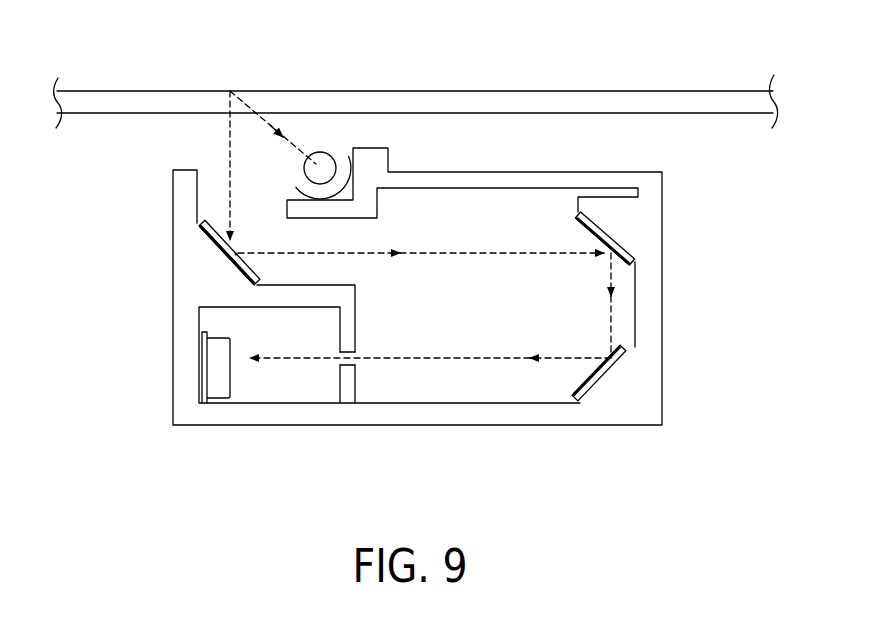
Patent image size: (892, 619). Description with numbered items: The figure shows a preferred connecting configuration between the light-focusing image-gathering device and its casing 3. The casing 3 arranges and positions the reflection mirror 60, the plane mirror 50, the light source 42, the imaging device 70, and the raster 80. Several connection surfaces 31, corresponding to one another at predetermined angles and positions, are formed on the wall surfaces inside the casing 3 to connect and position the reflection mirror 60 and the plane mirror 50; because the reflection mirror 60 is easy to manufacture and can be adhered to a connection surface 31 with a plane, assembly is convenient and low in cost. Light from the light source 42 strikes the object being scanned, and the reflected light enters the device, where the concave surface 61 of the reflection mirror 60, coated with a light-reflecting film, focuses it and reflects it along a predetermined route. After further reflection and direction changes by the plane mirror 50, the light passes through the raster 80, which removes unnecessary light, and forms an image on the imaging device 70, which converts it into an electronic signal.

The casing 3 is at (655, 220).
The first light source 42 is at (324, 152).
The reflection mirror 60 is at (205, 232).
The connection surface 31 is at (222, 265).
The concave surface 61 is at (238, 253).
The plane mirror 50 is at (632, 258).
The imaging device 70 is at (217, 388).
The raster 80 is at (352, 397).